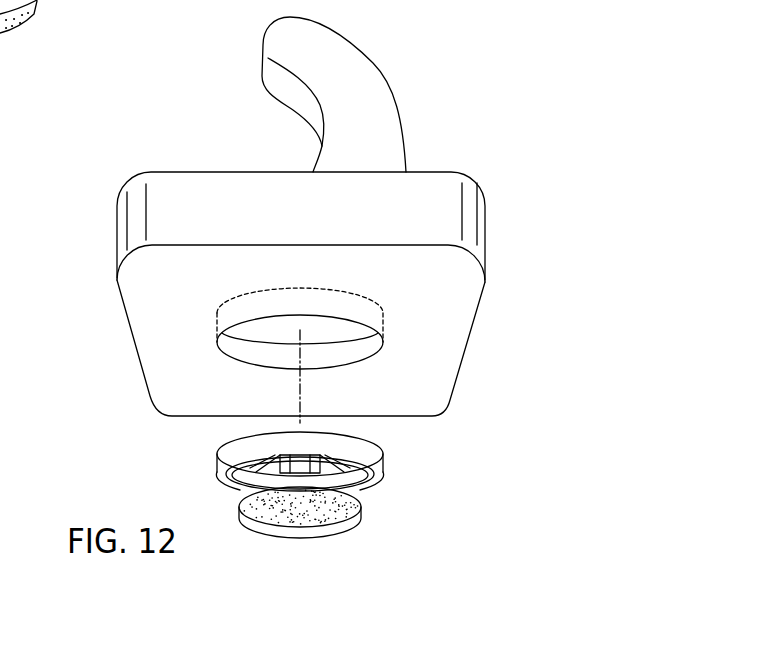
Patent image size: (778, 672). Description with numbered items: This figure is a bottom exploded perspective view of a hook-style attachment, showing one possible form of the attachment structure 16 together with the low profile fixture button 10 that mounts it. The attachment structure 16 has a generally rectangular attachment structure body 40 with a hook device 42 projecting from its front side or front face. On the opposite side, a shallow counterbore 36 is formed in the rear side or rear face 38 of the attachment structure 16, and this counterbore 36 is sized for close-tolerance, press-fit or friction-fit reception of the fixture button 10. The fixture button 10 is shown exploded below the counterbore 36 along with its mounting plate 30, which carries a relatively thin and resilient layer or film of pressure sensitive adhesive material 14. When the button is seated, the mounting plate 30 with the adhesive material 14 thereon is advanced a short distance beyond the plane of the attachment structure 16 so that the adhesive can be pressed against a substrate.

The low profile fixture button 10 is at (402, 473).
The adhesive material 14 is at (32, 13).
The attachment structure 16 is at (90, 290).
The mounting plate 30 is at (353, 492).
The counterbore 36 is at (365, 343).
The rear face 38 is at (467, 288).
The attachment structure body 40 is at (468, 185).
The hook device 42 is at (360, 75).